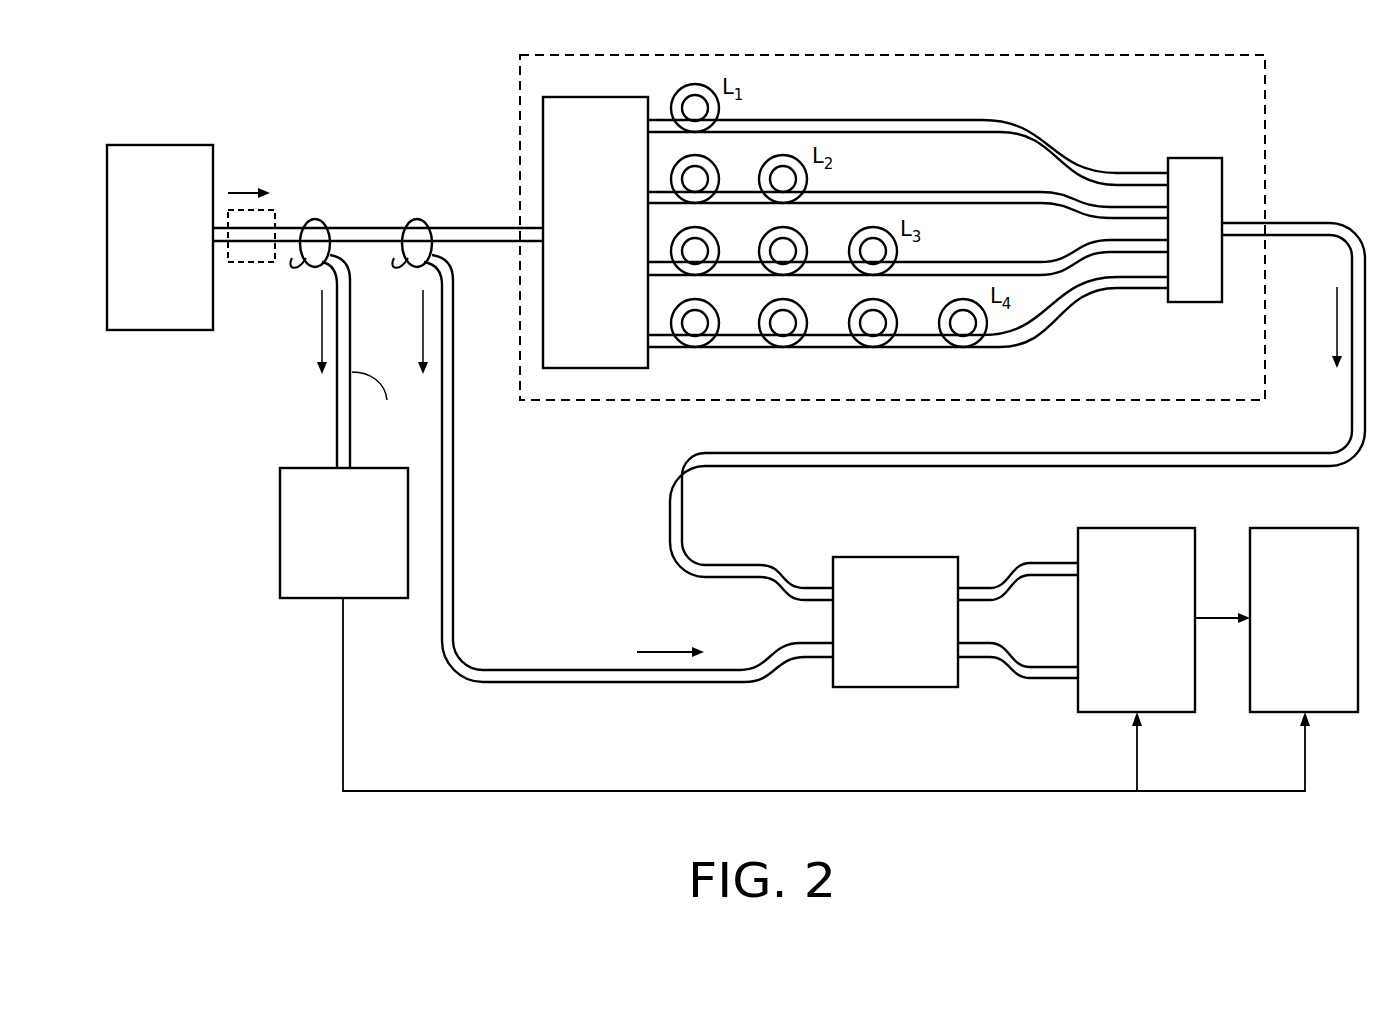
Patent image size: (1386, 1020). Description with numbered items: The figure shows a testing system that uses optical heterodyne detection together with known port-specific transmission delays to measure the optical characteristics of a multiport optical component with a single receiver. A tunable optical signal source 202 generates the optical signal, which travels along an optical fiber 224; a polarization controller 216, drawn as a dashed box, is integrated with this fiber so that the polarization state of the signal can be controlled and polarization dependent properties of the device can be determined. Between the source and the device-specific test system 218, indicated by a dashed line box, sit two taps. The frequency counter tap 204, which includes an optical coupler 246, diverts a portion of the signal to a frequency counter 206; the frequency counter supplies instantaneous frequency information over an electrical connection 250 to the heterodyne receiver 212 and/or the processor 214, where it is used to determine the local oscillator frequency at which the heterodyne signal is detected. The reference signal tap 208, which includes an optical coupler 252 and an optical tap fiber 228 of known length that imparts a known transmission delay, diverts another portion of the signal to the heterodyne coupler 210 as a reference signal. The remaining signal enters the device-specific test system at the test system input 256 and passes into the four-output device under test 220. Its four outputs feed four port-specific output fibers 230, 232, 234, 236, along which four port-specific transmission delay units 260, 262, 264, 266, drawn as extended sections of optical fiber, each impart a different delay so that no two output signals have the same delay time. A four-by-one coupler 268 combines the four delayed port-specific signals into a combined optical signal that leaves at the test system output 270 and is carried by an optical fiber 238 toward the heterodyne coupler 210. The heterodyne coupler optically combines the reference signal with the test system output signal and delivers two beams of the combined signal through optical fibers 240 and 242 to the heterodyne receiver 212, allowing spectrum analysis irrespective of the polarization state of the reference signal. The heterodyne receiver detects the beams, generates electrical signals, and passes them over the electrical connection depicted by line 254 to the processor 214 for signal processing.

The tunable optical signal source 202 is at (143, 310).
The frequency counter tap 204 is at (315, 186).
The frequency counter 206 is at (327, 583).
The reference signal tap 208 is at (417, 186).
The heterodyne coupler 210 is at (879, 668).
The heterodyne receiver 212 is at (1120, 671).
The processor 214 is at (1287, 671).
The polarization controller 216 is at (243, 262).
The device-specific test system 218 is at (1268, 108).
The device under test 220 is at (579, 291).
The optical fiber 224 is at (362, 227).
The optical tap fiber 228 is at (536, 668).
The output fiber 230 is at (1013, 124).
The output fiber 232 is at (1043, 188).
The output fiber 234 is at (1043, 278).
The output fiber 236 is at (1017, 337).
The optical fiber 238 is at (668, 510).
The optical fiber 240 is at (1038, 562).
The optical fiber 242 is at (1038, 680).
The optical coupler 246 is at (318, 270).
The electrical connection 250 is at (537, 795).
The optical coupler 252 is at (413, 270).
The electrical connection line 254 is at (1218, 612).
The test system input 256 is at (543, 248).
The port-specific transmission delay unit 260 is at (678, 84).
The port-specific transmission delay unit 262 is at (720, 178).
The port-specific transmission delay unit 264 is at (720, 250).
The port-specific transmission delay unit 266 is at (720, 320).
The 4×1 coupler 268 is at (1197, 157).
The test system output 270 is at (1238, 222).